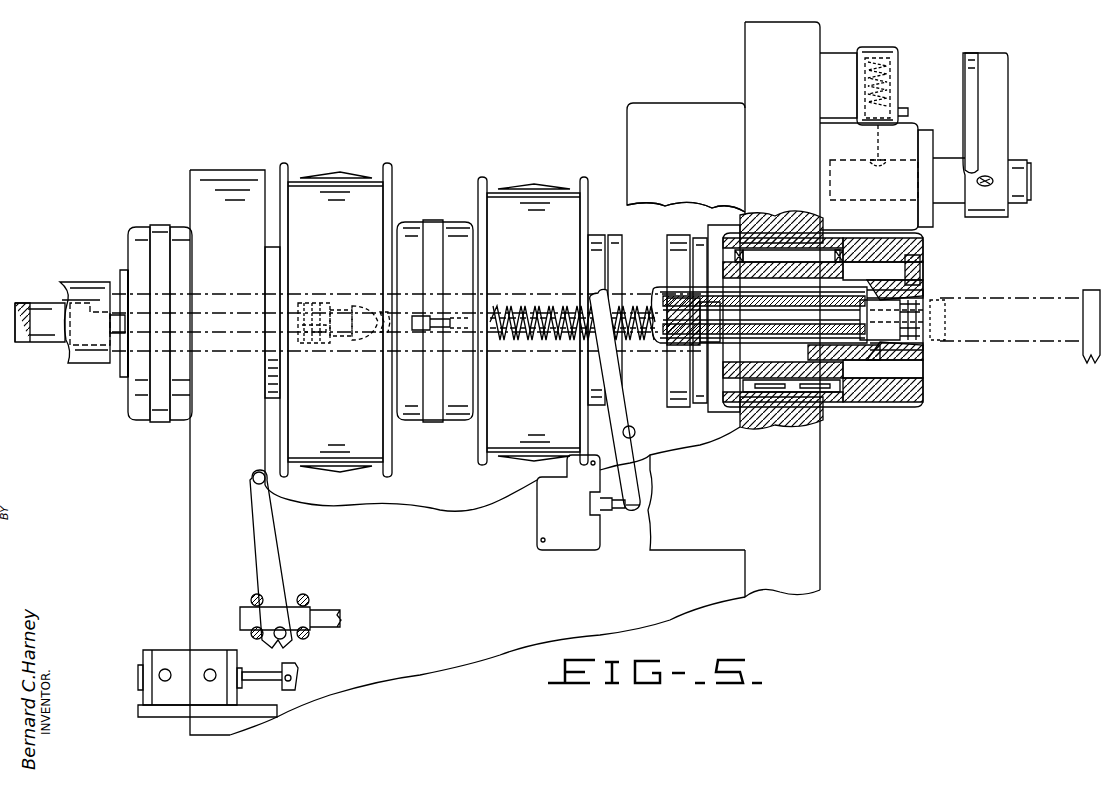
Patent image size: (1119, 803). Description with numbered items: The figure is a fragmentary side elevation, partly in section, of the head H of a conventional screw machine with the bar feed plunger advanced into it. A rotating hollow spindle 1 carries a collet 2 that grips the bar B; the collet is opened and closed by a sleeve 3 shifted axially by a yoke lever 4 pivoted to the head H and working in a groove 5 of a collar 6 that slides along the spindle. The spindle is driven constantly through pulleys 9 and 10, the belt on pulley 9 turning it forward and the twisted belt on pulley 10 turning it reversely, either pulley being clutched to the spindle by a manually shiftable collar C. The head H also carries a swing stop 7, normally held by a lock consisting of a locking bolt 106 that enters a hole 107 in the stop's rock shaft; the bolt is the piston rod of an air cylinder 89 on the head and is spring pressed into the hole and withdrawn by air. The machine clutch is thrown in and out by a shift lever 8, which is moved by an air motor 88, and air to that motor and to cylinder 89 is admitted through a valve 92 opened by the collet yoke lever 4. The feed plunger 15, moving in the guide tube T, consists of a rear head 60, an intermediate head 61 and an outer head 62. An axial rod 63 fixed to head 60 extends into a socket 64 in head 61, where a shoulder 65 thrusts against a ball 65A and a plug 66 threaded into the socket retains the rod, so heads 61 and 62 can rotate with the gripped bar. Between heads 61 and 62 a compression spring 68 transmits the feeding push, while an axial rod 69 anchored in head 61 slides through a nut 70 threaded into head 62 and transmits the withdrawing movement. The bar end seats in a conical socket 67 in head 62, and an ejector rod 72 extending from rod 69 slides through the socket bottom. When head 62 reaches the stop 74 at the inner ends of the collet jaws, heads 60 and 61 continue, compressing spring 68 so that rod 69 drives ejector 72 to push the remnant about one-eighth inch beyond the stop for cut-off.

The head 60 is at (36, 304).
The feed plunger 15 is at (44, 305).
The tube T is at (105, 278).
The axial rod 63 is at (228, 320).
The pulley 9 is at (357, 170).
The plug 66 is at (308, 303).
The shoulder 65 is at (353, 308).
The socket 64 is at (338, 343).
The ball 65A is at (370, 340).
The manually shiftable collar C is at (407, 230).
The intermediate head 61 is at (455, 310).
The pulley 10 is at (548, 186).
The compression spring 68 is at (512, 305).
The axial rod 69 is at (522, 342).
The groove 5 is at (600, 236).
The collar 6 is at (620, 238).
The hollow spindle 1 is at (660, 287).
The ejector rod 72 is at (690, 297).
The nut 70 is at (686, 335).
The yoke lever 4 is at (636, 440).
The shift lever 8 is at (280, 548).
The air motor 88 is at (218, 683).
The valve 92 is at (581, 502).
The head H is at (745, 32).
The cylinder 89 is at (876, 50).
The locking bolt 106 is at (872, 146).
The hole 107 is at (890, 180).
The swing stop 7 is at (978, 60).
The sleeve 3 is at (920, 270).
The collet 2 is at (923, 296).
The conical socket 67 is at (923, 312).
The stop 74 is at (920, 345).
The outer head 62 is at (860, 380).
The bar B is at (1003, 292).